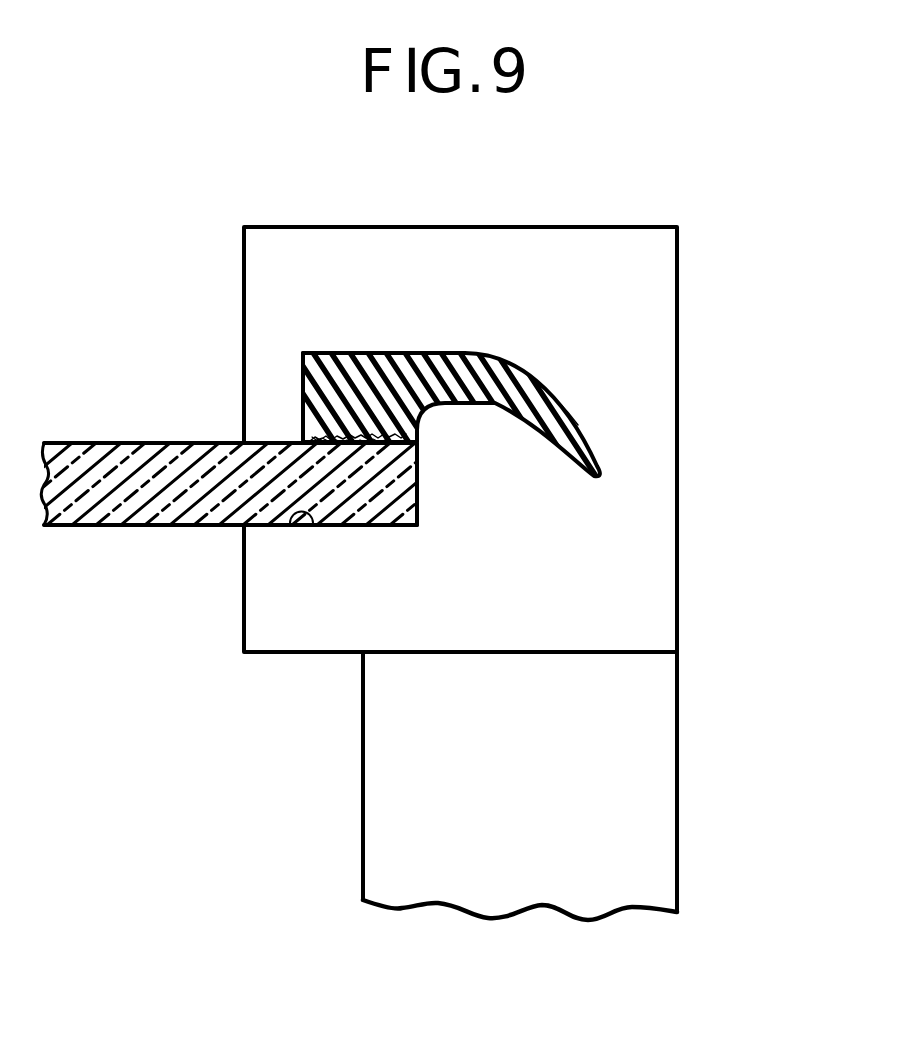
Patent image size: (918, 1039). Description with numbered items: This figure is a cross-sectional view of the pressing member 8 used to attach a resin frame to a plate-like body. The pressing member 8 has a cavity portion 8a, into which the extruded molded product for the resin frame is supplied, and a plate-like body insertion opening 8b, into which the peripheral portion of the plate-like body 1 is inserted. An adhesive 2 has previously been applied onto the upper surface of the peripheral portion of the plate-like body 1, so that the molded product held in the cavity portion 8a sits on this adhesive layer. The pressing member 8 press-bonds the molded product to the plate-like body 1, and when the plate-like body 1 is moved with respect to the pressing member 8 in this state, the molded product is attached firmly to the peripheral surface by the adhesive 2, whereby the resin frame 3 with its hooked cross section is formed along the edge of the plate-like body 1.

The plate-like body 1 is at (133, 467).
The adhesive 2 is at (390, 447).
The resin frame 3 is at (446, 340).
The pressing member 8 is at (648, 611).
The cavity portion 8a is at (358, 360).
The plate-like body insertion opening 8b is at (277, 527).